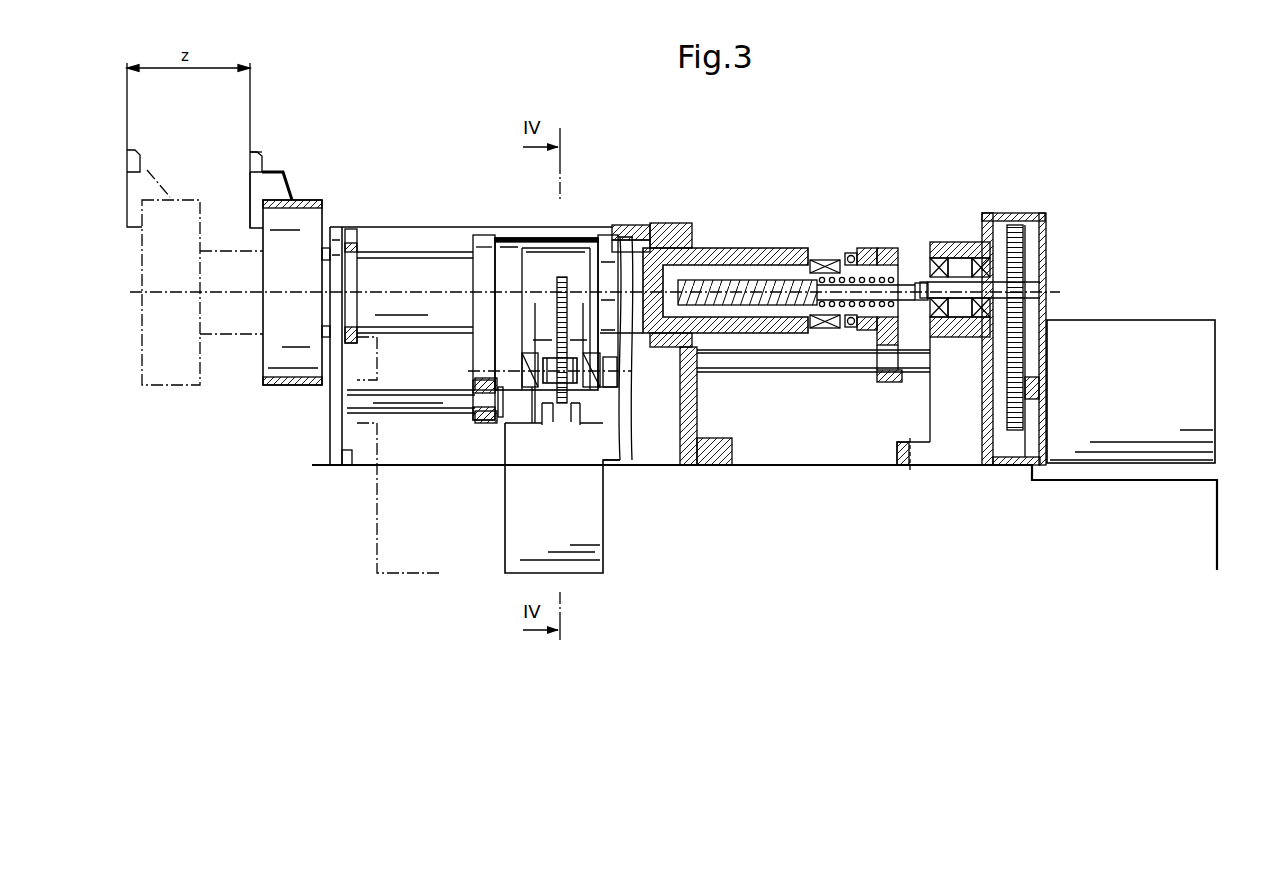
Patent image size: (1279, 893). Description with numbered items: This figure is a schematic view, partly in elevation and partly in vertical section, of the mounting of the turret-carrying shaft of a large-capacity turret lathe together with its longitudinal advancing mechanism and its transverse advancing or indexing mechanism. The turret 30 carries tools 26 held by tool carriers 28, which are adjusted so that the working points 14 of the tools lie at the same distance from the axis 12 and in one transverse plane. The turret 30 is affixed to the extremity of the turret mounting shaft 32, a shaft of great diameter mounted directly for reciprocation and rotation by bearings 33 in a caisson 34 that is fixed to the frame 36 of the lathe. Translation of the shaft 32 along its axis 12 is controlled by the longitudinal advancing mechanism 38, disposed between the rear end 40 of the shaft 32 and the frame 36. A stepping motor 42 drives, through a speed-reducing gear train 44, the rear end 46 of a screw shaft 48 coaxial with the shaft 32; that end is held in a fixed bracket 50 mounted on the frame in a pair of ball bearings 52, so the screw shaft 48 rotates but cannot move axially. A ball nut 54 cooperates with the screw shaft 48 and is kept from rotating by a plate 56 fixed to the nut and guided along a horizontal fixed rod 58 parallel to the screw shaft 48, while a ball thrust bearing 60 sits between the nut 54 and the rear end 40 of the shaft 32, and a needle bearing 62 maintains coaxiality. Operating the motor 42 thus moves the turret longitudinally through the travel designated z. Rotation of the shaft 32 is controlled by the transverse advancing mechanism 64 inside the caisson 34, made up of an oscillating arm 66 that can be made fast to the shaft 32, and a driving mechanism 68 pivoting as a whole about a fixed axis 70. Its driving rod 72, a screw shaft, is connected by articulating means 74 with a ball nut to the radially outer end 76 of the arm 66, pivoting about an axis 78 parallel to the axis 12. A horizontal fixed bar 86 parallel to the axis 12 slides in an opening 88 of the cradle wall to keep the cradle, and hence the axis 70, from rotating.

The axis of the turret mounting shaft 12 is at (215, 297).
The working points of the tools 14 is at (252, 151).
The tools 26 is at (250, 162).
The tool carriers 28 is at (263, 190).
The turret 30 is at (301, 210).
The turret mounting shaft 32 is at (728, 250).
The bearings 33 is at (353, 243).
The caisson 34 is at (698, 457).
The frame 36 is at (1204, 512).
The longitudinal advancing mechanism 38 is at (1058, 308).
The rear end of the shaft 40 is at (835, 326).
The stepping motor 42 is at (1188, 322).
The speed-reducing gear train 44 is at (1030, 228).
The rear end of the screw shaft 46 is at (960, 300).
The screw shaft 48 is at (785, 280).
The support foot 50 is at (960, 452).
The ball bearings 52 is at (980, 262).
The ball nut 54 is at (868, 250).
The plate 56 is at (890, 248).
The fixed bar or rod 58 is at (724, 366).
The ball thrust bearing 60 is at (852, 332).
The bearing 62 is at (813, 323).
The transverse advancing mechanism 64 is at (494, 431).
The oscillating arm 66 is at (524, 242).
The driving mechanism 68 is at (592, 550).
The fixed axis 70 is at (472, 372).
The driving rod 72 is at (557, 280).
The pivotal connecting or articulating means 74 is at (573, 384).
The radially outer end of the oscillating arm 76 is at (528, 341).
The pivotal axis 78 is at (532, 426).
The fixed bar 86 is at (405, 404).
The opening 88 is at (477, 393).